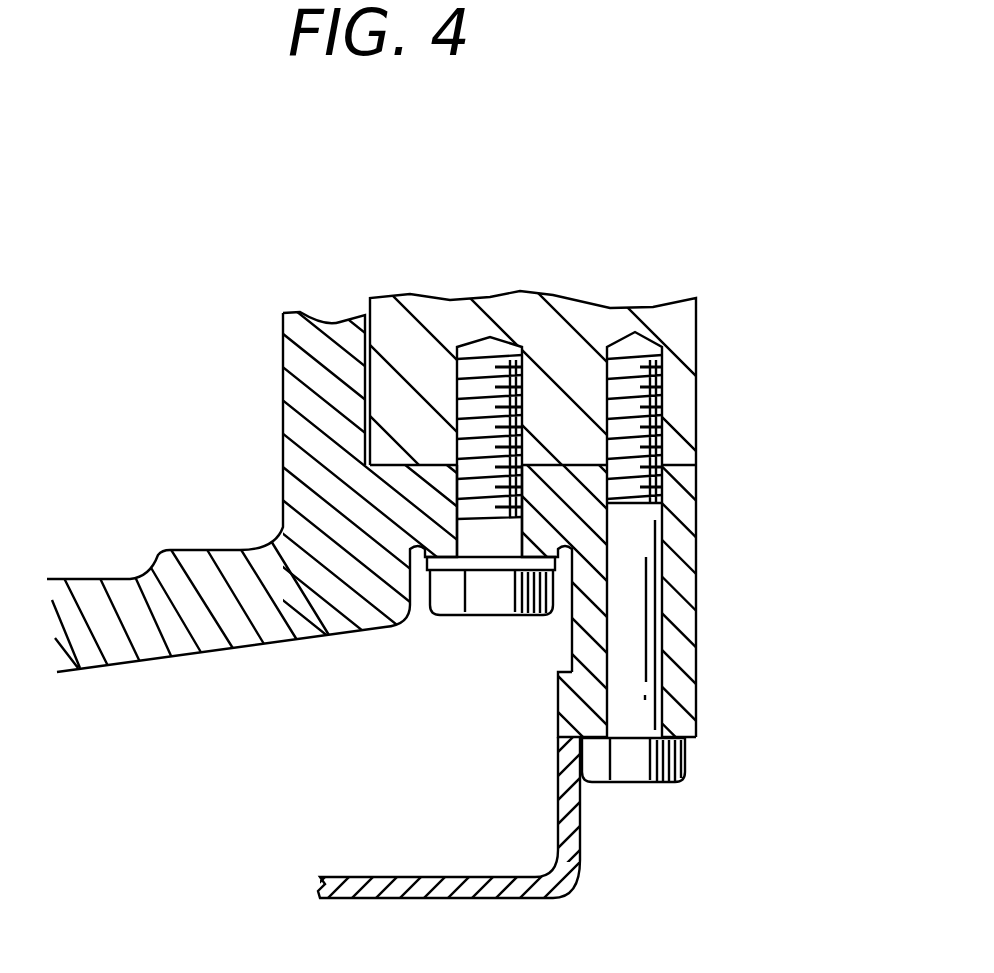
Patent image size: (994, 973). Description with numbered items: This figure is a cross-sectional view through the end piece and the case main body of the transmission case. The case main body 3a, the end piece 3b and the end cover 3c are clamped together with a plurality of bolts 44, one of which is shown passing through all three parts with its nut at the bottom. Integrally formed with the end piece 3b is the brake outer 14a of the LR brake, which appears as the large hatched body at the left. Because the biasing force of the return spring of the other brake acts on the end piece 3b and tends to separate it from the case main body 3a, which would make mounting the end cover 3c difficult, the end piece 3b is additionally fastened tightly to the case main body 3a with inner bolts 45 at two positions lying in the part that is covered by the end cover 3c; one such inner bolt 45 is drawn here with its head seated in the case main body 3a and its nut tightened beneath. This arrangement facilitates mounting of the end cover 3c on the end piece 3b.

The brake outer 14a is at (312, 390).
The case main body 3a is at (690, 367).
The end piece 3b is at (697, 577).
The end cover 3c is at (685, 708).
The inner bolts 45 is at (490, 600).
The bolts 44 is at (637, 768).